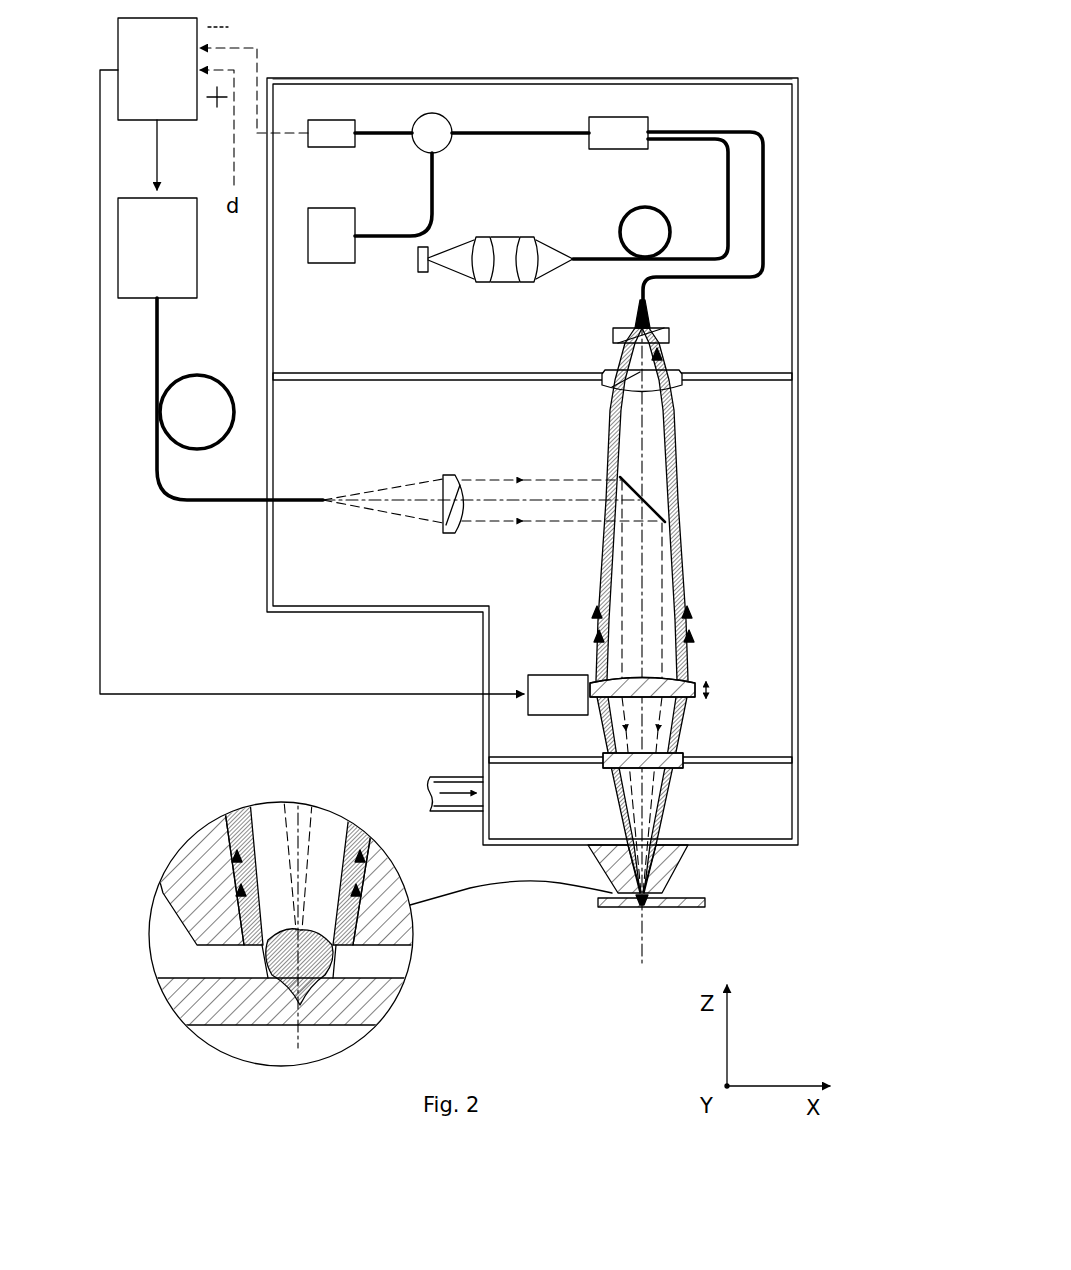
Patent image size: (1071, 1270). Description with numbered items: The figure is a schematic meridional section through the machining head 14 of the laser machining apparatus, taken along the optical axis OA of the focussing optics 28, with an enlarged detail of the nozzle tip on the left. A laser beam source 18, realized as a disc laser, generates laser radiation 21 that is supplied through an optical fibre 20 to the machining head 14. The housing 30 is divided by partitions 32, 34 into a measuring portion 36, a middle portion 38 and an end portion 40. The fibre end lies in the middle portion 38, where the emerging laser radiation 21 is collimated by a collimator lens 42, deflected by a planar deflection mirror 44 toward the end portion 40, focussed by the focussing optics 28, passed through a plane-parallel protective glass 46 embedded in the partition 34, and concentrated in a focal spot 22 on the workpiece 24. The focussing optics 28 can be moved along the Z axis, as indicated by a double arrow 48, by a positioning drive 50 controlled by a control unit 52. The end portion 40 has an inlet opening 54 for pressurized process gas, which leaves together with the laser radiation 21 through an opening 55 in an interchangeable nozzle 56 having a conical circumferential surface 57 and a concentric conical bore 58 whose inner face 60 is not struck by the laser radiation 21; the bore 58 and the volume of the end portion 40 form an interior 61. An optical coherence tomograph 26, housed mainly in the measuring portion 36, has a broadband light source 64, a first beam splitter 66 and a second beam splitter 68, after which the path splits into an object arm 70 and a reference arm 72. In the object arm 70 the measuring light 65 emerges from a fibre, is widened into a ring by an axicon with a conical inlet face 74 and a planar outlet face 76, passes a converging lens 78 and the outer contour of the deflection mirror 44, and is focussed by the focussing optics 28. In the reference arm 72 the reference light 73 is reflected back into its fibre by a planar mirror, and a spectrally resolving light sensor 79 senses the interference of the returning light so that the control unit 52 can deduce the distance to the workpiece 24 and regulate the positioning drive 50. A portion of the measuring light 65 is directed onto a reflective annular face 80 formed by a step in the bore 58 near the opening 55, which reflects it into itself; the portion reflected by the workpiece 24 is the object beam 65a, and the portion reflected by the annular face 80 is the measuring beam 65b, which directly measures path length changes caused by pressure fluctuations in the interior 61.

The machining head 14 is at (236, 611).
The laser beam source 18 is at (170, 261).
The optical fibre 20 is at (204, 506).
The laser radiation 21 is at (393, 490).
The focal spot 22 is at (640, 912).
The workpiece 24 is at (690, 908).
The optical coherence tomograph 26 is at (523, 105).
The focussing optics 28 is at (690, 698).
The housing 30 is at (797, 66).
The partition 32 is at (467, 372).
The partition 34 is at (504, 757).
The measuring portion 36 is at (615, 77).
The middle portion 38 is at (790, 463).
The end portion 40 is at (792, 775).
The collimator lens 42 is at (460, 475).
The planar deflection mirror 44 is at (655, 500).
The protective glass 46 is at (605, 768).
The double arrow 48 is at (712, 690).
The positioning drive 50 is at (540, 675).
The control unit 52 is at (170, 82).
The inlet opening 54 is at (486, 778).
The opening 55 is at (650, 910).
The nozzle 56 is at (688, 855).
The conical circumferential surface 57 is at (682, 870).
The conical bore 58 is at (658, 834).
The inner face 60 is at (627, 848).
The interior 61 is at (727, 805).
The broadband light source 64 is at (344, 249).
The measuring light 65 is at (463, 636).
The object beam 65a is at (687, 579).
The measuring beam 65b is at (686, 540).
The first beam splitter 66 is at (446, 146).
The second beam splitter 68 is at (612, 150).
The object arm 70 is at (670, 304).
The reference arm 72 is at (722, 175).
The reference light 73 is at (549, 250).
The conical inlet face 74 is at (636, 320).
The planar outlet face 76 is at (622, 341).
The converging lens 78 is at (418, 262).
The spectrally resolving light sensor 79 is at (342, 126).
The reflective annular face 80 is at (360, 915).
The optical axis OA is at (640, 592).